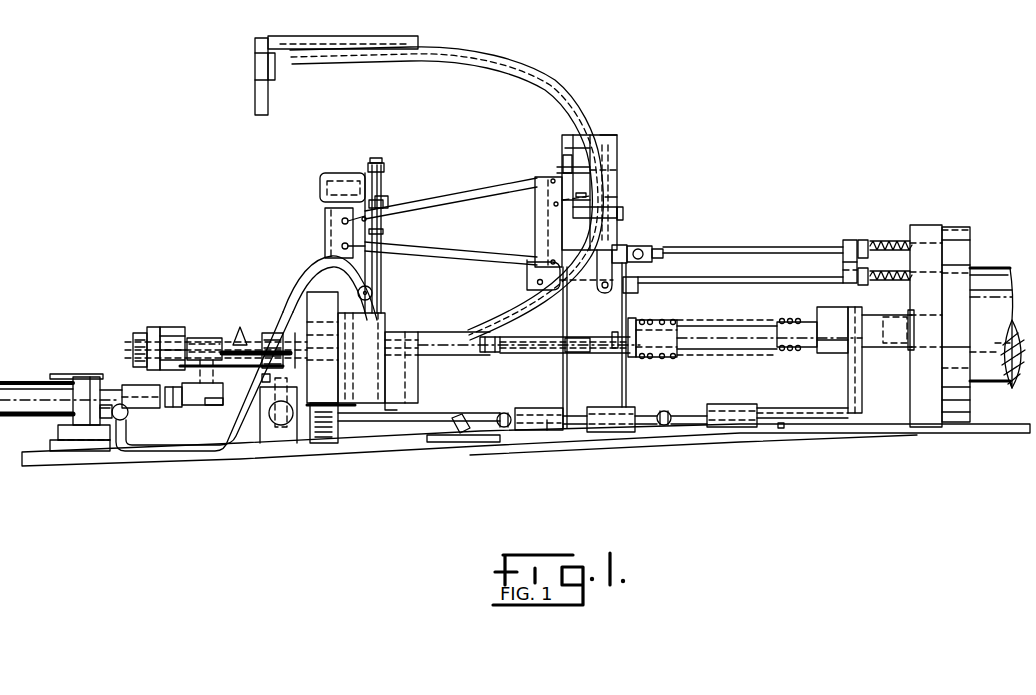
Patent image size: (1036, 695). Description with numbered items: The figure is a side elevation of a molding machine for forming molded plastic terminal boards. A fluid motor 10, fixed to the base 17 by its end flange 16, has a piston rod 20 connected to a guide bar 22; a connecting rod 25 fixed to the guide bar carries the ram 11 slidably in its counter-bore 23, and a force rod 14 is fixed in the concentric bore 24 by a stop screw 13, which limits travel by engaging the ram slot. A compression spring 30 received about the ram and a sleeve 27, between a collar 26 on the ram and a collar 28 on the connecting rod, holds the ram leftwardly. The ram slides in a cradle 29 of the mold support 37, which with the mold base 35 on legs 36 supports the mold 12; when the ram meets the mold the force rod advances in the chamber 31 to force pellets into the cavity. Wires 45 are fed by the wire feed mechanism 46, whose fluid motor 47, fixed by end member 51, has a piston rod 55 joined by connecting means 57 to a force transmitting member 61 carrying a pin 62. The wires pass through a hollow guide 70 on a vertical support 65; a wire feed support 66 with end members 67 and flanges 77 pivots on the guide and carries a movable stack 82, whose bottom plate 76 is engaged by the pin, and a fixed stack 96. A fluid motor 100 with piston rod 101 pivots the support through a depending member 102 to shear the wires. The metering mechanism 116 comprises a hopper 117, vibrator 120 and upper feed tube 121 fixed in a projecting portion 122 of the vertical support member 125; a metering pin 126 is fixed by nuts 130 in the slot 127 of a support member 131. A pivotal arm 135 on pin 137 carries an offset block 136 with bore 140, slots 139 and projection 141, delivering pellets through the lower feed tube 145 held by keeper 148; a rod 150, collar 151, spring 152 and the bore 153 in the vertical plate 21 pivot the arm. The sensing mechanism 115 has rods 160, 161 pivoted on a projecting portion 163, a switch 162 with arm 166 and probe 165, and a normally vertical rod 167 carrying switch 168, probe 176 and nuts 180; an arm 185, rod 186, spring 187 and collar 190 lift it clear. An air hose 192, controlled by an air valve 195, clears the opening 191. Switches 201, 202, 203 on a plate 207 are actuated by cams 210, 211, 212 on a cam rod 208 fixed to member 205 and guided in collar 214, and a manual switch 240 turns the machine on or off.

The fluid motor 10 is at (1008, 274).
The ram 11 is at (457, 352).
The mold 12 is at (347, 367).
The stop screw 13 is at (587, 340).
The force rod 14 is at (523, 342).
The end flange 16 is at (930, 228).
The base 17 is at (918, 433).
The piston rod 20 is at (900, 334).
The vertical plate 21 is at (853, 297).
The guide bar 22 is at (833, 351).
The counter-bore 23 is at (498, 353).
The concentric bore 24 is at (615, 357).
The connecting rod 25 is at (722, 327).
The collar 26 is at (637, 319).
The sleeve 27 is at (787, 322).
The collar 28 is at (820, 310).
The cradle 29 is at (418, 367).
The compression spring 30 is at (667, 317).
The bore or chamber 31 is at (405, 340).
The mold base 35 is at (345, 393).
The legs 36 is at (338, 408).
The mold support 37 is at (418, 390).
The wires or filaments 45 is at (238, 342).
The wire feed mechanism 46 is at (200, 314).
The fluid motor 47 is at (13, 392).
The end member 51 is at (84, 378).
The piston rod 55 is at (135, 392).
The connecting means 57 is at (172, 420).
The force transmitting member 61 is at (222, 393).
The pin 62 is at (185, 406).
The vertical support 65 is at (163, 327).
The wire feed support 66 is at (262, 406).
The vertical end members 67 is at (175, 328).
The hollow guide 70 is at (140, 333).
The bottom plate 76 is at (222, 406).
The flanges 77 is at (218, 372).
The movable stack 82 is at (213, 335).
The fixed stack 96 is at (261, 330).
The fluid motor 100 is at (262, 428).
The piston rod 101 is at (290, 420).
The depending member 102 is at (270, 378).
The sensing mechanism 115 is at (388, 200).
The metering mechanism 116 is at (630, 165).
The hopper 117 is at (378, 40).
The vibrator 120 is at (262, 68).
The upper feed or pellet supply tube 121 is at (487, 62).
The projecting portion 122 is at (617, 143).
The vertical support member 125 is at (617, 197).
The metering pin 126 is at (587, 188).
The elongated slot 127 is at (556, 204).
The nuts 130 is at (560, 163).
The support member 131 is at (570, 201).
The pivotal arm 135 is at (617, 247).
The offset block 136 is at (620, 150).
The pin 137 is at (608, 293).
The elongated slots 139 is at (630, 173).
The bore 140 is at (613, 137).
The projection 141 is at (565, 150).
The lower feed or pellet delivery tube 145 is at (623, 217).
The keeper 148 is at (590, 214).
The rod 150 is at (803, 247).
The collar 151 is at (864, 240).
The compression spring 152 is at (883, 240).
The bore 153 is at (845, 240).
The rod 160 is at (448, 201).
The rod 161 is at (436, 252).
The electrical switch 162 is at (325, 213).
The projecting portion 163 is at (542, 241).
The probe 165 is at (323, 262).
The downwardly extending arm 166 is at (333, 262).
The normally vertical rod 167 is at (368, 282).
The switch 168 is at (323, 173).
The probe 176 is at (378, 313).
The nuts 180 is at (387, 208).
The arm 185 is at (527, 275).
The rod 186 is at (697, 278).
The compression spring 187 is at (893, 281).
The collar 190 is at (848, 270).
The vertically extending opening 191 is at (385, 405).
The air tube or hose 192 is at (303, 277).
The air valve 195 is at (62, 374).
The switch 201 is at (733, 404).
The switch 202 is at (630, 408).
The switch 203 is at (530, 413).
The member 205 is at (862, 386).
The plate 207 is at (782, 428).
The cam rod 208 is at (452, 417).
The cam 210 is at (783, 408).
The cam 211 is at (670, 411).
The cam 212 is at (503, 413).
The collar 214 is at (342, 430).
The manually operated switch 240 is at (470, 442).